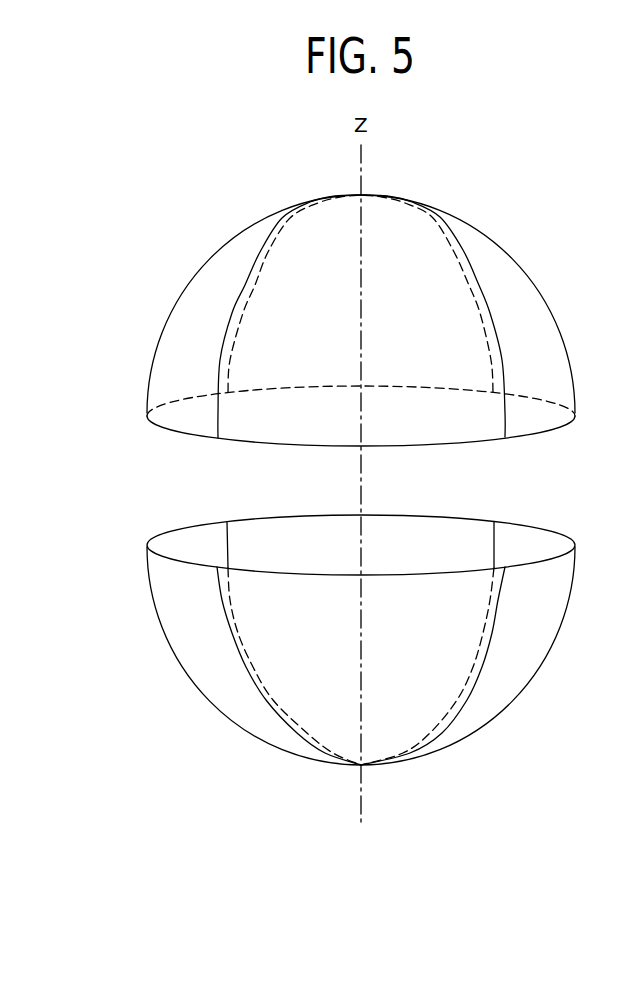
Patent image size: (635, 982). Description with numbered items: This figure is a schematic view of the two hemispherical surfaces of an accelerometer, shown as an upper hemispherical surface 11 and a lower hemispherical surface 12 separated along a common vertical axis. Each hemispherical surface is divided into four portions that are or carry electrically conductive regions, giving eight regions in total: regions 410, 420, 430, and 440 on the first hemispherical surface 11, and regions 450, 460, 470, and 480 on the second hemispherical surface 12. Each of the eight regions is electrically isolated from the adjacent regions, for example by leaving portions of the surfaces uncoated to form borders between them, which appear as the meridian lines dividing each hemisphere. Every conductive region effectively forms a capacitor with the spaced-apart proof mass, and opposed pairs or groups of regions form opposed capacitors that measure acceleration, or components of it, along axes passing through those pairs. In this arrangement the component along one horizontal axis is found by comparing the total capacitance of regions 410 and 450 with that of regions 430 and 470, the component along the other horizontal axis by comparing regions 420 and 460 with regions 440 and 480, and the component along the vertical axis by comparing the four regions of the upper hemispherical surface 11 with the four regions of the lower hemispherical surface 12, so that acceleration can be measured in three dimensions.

The hemispherical surface 11 is at (217, 187).
The hemispherical surface 12 is at (202, 777).
The electrically conductive region 410 is at (443, 422).
The electrically conductive region 420 is at (185, 290).
The electrically conductive region 430 is at (413, 248).
The electrically conductive region 440 is at (560, 325).
The electrically conductive region 450 is at (425, 673).
The electrically conductive region 460 is at (153, 612).
The electrically conductive region 470 is at (277, 535).
The electrically conductive region 480 is at (547, 657).